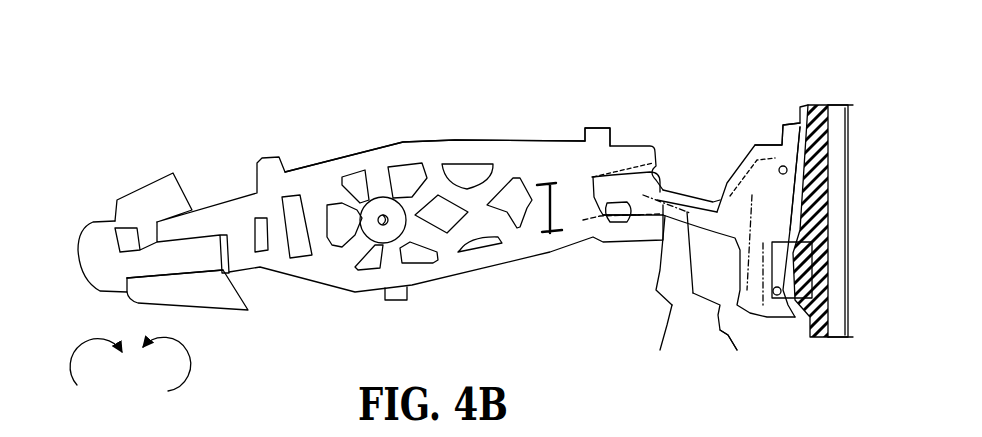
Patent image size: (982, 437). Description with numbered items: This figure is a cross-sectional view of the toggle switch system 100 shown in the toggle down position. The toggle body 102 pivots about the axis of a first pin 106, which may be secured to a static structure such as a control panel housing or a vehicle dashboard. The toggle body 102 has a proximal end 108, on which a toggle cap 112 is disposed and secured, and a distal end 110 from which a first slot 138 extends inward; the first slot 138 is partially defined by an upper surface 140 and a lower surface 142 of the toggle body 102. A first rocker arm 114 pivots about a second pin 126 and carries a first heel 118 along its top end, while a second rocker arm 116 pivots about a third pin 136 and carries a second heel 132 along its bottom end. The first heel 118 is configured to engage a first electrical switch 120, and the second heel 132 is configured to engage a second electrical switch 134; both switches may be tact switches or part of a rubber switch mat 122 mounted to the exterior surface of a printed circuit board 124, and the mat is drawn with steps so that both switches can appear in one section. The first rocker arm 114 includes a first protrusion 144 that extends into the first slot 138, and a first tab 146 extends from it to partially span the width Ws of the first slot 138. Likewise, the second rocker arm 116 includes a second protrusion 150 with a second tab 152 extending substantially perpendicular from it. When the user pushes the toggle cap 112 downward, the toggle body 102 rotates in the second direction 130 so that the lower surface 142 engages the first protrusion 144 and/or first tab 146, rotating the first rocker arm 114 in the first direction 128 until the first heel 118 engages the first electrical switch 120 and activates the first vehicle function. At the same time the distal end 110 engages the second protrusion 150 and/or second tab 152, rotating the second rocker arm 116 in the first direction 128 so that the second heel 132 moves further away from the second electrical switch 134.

The toggle switch system 100 is at (212, 50).
The toggle body 102 is at (370, 127).
The first pin 106 is at (381, 218).
The proximal end 108 is at (223, 203).
The distal end 110 is at (523, 173).
The toggle cap 112 is at (93, 222).
The first rocker arm 114 is at (719, 168).
The second rocker arm 116 is at (664, 352).
The first heel 118 is at (793, 123).
The first electrical switch 120 is at (830, 163).
The rubber switch mat 122 is at (816, 92).
The printed circuit board 124 is at (837, 197).
The second pin 126 is at (780, 296).
The first direction 128 is at (69, 366).
The second direction 130 is at (189, 361).
The second heel 132 is at (737, 352).
The second electrical switch 134 is at (817, 282).
The third pin 136 is at (763, 143).
The first slot 138 is at (577, 205).
The upper surface 140 is at (597, 190).
The lower surface 142 is at (607, 223).
The first protrusion 144 is at (688, 295).
The first tab 146 is at (598, 128).
The second protrusion 150 is at (683, 190).
The second tab 152 is at (600, 215).
The width of the first slot Ws is at (550, 222).